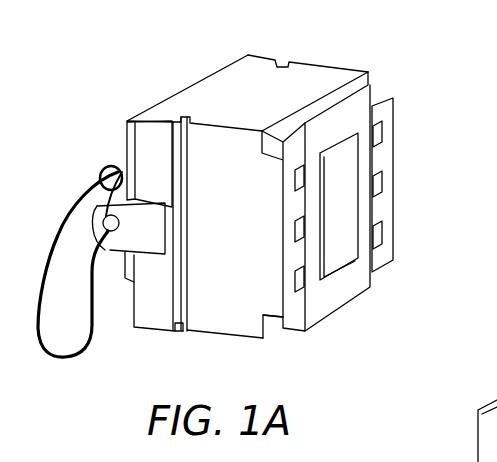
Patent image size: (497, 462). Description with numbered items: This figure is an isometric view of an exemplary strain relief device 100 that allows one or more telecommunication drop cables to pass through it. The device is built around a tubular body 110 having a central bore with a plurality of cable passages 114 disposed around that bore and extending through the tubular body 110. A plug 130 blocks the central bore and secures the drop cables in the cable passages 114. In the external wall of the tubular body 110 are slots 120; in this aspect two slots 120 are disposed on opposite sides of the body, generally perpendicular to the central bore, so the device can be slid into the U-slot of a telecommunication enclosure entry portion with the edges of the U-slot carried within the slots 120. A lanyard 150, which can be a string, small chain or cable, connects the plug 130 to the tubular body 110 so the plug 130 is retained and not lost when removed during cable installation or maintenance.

The strain relief device 100 is at (123, 60).
The tubular body 110 is at (213, 72).
The cable passages 114 is at (378, 133).
The slot 120 is at (287, 63).
The plug 130 is at (345, 291).
The lanyard 150 is at (50, 358).